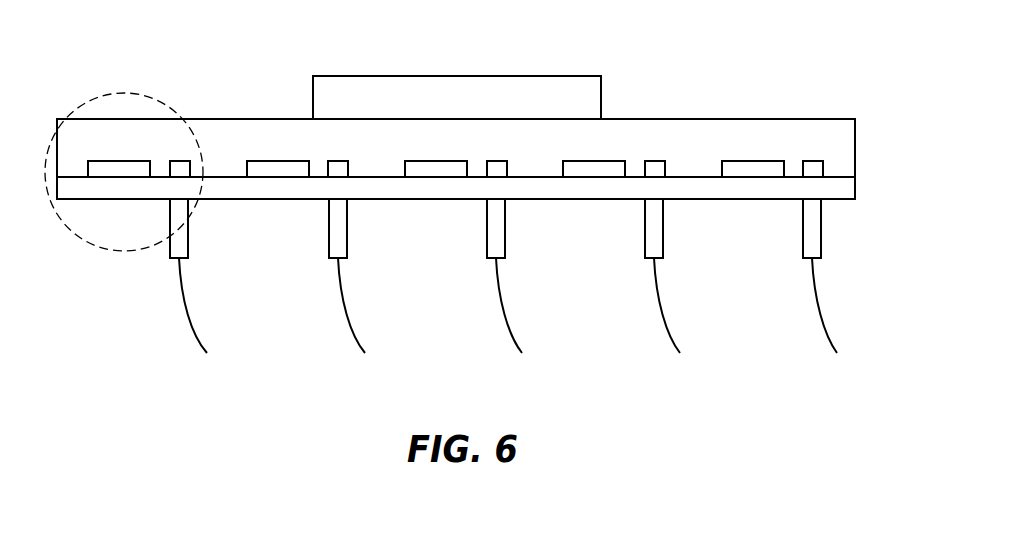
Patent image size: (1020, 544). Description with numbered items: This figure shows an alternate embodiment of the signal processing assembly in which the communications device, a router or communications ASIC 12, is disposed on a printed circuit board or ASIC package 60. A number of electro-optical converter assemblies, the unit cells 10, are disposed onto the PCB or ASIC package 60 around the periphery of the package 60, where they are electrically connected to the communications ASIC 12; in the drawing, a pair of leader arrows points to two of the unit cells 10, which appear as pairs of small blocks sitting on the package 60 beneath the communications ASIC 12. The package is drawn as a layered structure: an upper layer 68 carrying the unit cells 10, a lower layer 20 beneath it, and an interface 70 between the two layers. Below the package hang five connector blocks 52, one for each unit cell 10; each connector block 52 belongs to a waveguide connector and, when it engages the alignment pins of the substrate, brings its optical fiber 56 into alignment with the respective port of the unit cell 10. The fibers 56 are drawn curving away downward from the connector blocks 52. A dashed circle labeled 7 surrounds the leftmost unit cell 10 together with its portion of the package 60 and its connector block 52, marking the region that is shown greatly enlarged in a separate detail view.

The enlarged section 7 is at (170, 110).
The unit cells 10 is at (630, 152).
The communications ASIC 12 is at (513, 75).
The lower substrate layer 20 is at (125, 199).
The connector block 52 is at (660, 228).
The fibers 56 is at (830, 333).
The PCB or ASIC package 60 is at (95, 122).
The upper substrate layer 68 is at (207, 121).
The interface layer 70 is at (222, 177).